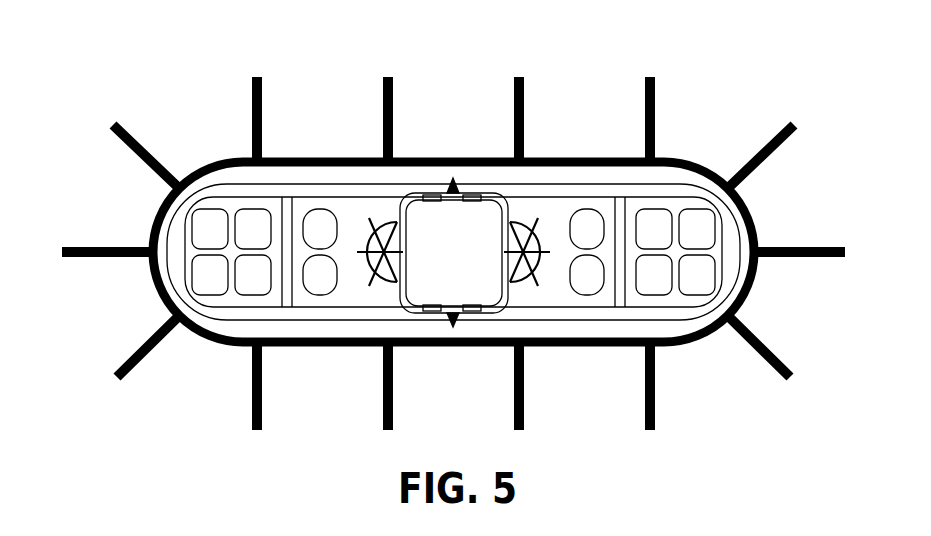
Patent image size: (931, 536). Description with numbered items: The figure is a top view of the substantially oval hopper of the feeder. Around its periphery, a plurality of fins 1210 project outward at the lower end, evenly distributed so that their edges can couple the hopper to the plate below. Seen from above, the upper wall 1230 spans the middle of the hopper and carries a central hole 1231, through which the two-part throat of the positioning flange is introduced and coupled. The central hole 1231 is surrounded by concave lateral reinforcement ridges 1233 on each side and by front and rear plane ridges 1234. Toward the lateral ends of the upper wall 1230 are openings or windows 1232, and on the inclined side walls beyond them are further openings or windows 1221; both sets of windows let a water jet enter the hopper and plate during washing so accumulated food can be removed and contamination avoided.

The fins 1210 is at (262, 112).
The openings or windows 1221 is at (698, 222).
The openings or windows 1232 is at (580, 222).
The front and rear plane ridges 1234 is at (453, 178).
The central hole 1231 is at (438, 267).
The concave lateral reinforcement ridges 1233 is at (372, 270).
The upper wall 1230 is at (550, 287).